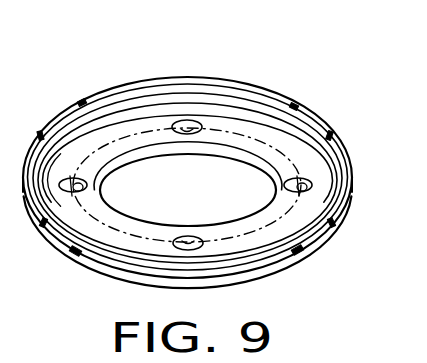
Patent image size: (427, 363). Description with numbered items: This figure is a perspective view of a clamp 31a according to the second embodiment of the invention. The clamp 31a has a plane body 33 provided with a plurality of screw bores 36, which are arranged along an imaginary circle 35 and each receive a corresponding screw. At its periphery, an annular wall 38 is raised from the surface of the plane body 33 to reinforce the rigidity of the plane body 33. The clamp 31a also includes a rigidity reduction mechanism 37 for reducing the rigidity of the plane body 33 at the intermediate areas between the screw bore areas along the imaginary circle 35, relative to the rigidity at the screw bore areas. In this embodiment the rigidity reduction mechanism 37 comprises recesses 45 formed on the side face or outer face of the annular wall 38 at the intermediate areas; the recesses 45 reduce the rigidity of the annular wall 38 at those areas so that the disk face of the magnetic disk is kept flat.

The clamp 31a is at (100, 61).
The plane body 33 is at (217, 120).
The imaginary circle 35 is at (356, 167).
The screw bores 36 is at (189, 134).
The rigidity reduction mechanism 37 is at (372, 76).
The annular wall 38 is at (247, 87).
The recesses 45 is at (55, 124).